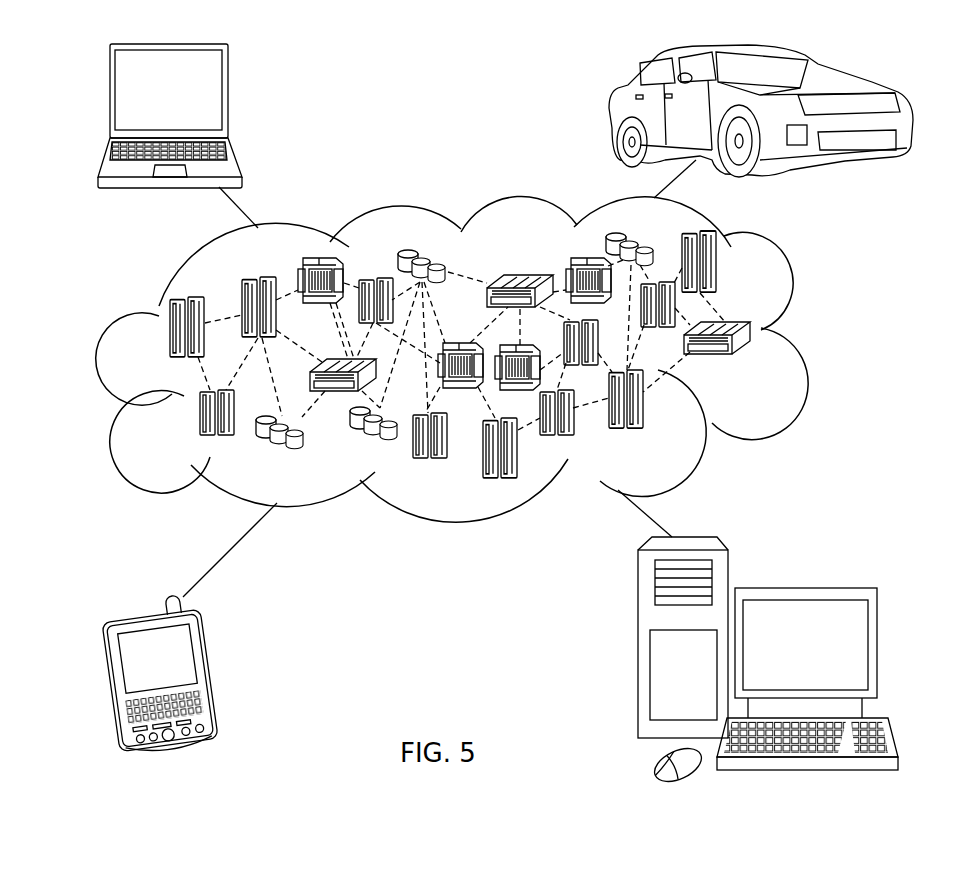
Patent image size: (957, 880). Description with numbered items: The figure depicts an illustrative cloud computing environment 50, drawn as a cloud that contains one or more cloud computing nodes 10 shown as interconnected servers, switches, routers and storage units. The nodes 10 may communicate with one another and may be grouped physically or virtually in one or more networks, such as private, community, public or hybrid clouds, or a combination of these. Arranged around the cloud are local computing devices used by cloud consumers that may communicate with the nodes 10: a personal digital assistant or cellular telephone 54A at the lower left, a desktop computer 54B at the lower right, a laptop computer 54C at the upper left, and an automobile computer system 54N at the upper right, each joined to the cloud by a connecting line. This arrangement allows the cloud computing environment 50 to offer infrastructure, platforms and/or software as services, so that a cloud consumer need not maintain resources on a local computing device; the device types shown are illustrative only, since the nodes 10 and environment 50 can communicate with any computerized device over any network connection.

The laptop computer 54C is at (228, 101).
The automobile computer system 54N is at (612, 108).
The cloud computing environment 50 is at (803, 337).
The cloud computing nodes 10 is at (752, 363).
The personal digital assistant or cellular telephone 54A is at (222, 672).
The desktop computer 54B is at (802, 587).